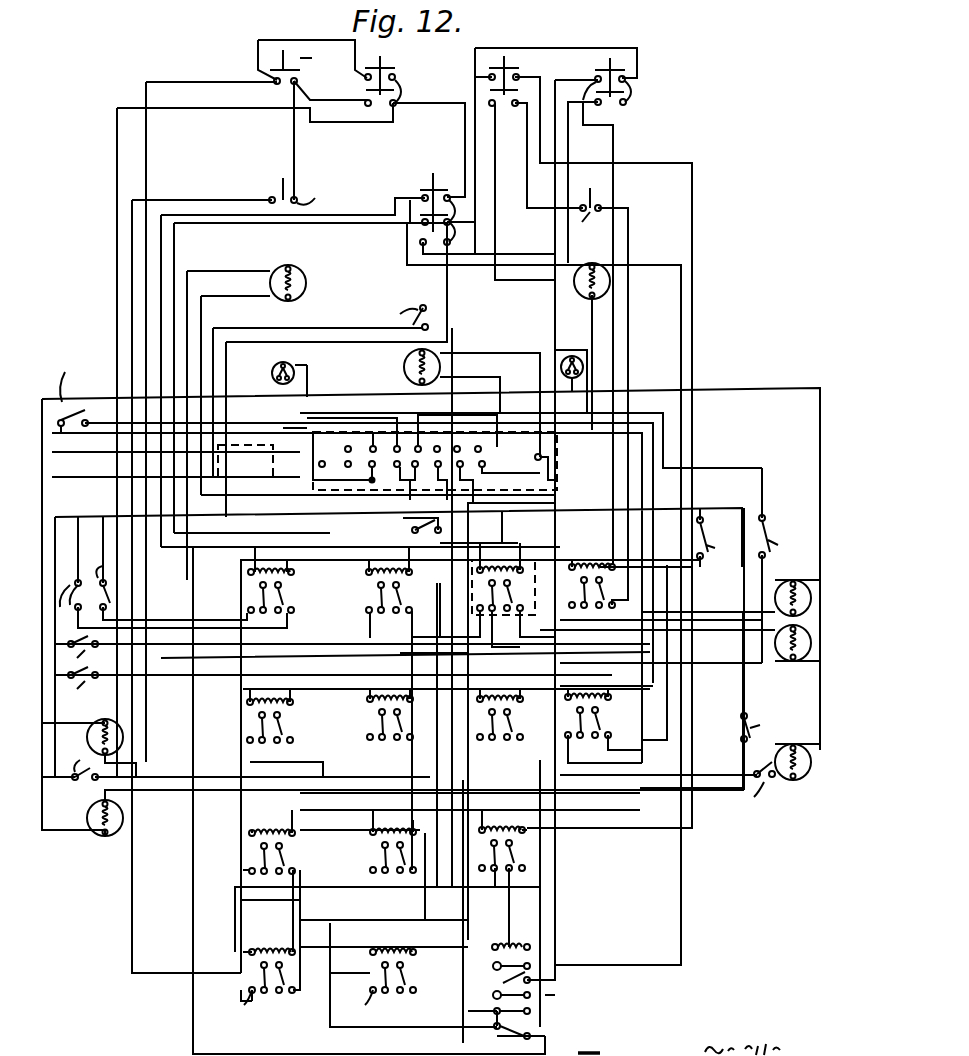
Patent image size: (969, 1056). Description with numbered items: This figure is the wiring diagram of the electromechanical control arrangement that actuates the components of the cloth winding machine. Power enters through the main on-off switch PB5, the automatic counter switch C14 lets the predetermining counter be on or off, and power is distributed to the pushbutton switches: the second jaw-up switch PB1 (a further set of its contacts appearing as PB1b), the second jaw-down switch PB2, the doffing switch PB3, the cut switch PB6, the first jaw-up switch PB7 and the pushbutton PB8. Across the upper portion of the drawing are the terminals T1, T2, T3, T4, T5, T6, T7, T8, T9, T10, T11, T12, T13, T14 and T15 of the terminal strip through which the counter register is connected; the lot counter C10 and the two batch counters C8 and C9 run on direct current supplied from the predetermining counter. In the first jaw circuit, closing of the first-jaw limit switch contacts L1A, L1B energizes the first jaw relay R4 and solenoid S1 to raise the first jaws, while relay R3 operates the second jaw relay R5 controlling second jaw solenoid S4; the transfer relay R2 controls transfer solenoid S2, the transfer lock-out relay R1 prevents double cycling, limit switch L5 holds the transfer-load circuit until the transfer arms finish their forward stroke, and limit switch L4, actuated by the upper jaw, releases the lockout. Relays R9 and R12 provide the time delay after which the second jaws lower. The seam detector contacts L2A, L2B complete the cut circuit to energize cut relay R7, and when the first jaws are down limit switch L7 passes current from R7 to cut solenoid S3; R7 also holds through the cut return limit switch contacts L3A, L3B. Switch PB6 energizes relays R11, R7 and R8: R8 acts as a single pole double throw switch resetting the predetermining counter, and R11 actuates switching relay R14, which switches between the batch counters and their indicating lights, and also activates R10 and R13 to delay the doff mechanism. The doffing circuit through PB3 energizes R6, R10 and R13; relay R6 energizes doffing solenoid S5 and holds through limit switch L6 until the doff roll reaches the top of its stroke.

The second jaw-up switch PB1 is at (312, 62).
The push button PB1 contacts PB1b is at (448, 160).
The second jaw-down switch PB2 is at (300, 210).
The doffing switch PB3 is at (400, 70).
The on-off switch PB5 is at (425, 303).
The cut switch PB6 is at (515, 68).
The first jaw-up switch PB7 is at (622, 67).
The push button PB8 is at (588, 214).
The batch counter C8 is at (592, 270).
The batch counter C9 is at (302, 272).
The lot counter C10 is at (405, 360).
The automatic counter switch C14 is at (73, 387).
The limit switch contact L1A is at (714, 538).
The limit switch contact L1B is at (90, 584).
The seam detector switch contact L2A is at (781, 536).
The seam detector switch contact L2B is at (415, 534).
The cut return limit switch contact L3A is at (79, 689).
The cut return limit switch contact L3B is at (765, 727).
The limit switch L4 is at (66, 606).
The limit switch L5 is at (83, 652).
The limit switch L6 is at (79, 764).
The limit switch L7 is at (761, 787).
The solenoid S1 is at (808, 565).
The transfer solenoid S2 is at (785, 660).
The cut solenoid S3 is at (800, 780).
The second jaw solenoid S4 is at (110, 722).
The doffing solenoid S5 is at (87, 818).
The transfer lock-out relay R1 is at (286, 596).
The transfer relay R2 is at (404, 586).
The relay R3 is at (514, 586).
The first jaw relay R4 is at (616, 576).
The second jaw relay R5 is at (286, 718).
The doffing relay R6 is at (380, 713).
The cut relay R7 is at (510, 715).
The relay R8 is at (604, 713).
The time delay relay R9 is at (298, 841).
The time delay relay R10 is at (385, 845).
The relay R11 is at (528, 838).
The time delay relay R12 is at (269, 989).
The time delay relay R13 is at (385, 989).
The switching relay R14 is at (515, 978).
The terminal T1 is at (335, 450).
The terminal T2 is at (364, 450).
The terminal T3 is at (389, 450).
The terminal T4 is at (410, 450).
The terminal T5 is at (430, 450).
The terminal T6 is at (450, 450).
The terminal T7 is at (471, 450).
The terminal T8 is at (329, 465).
The terminal T9 is at (355, 465).
The terminal T10 is at (382, 465).
The terminal T11 is at (405, 459).
The terminal T12 is at (425, 459).
The terminal T13 is at (448, 459).
The terminal T14 is at (469, 459).
The terminal T15 is at (493, 465).